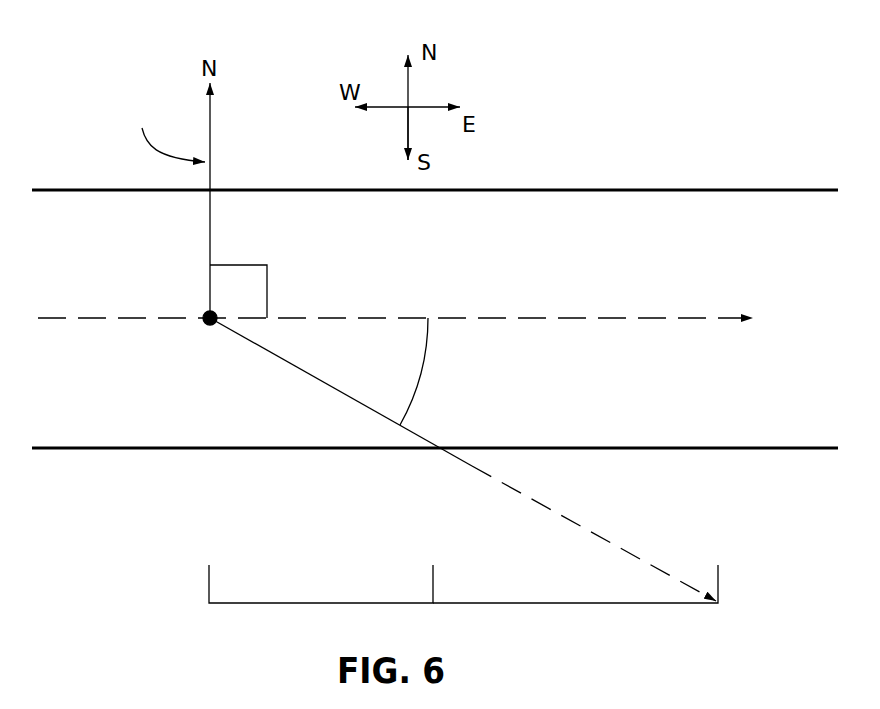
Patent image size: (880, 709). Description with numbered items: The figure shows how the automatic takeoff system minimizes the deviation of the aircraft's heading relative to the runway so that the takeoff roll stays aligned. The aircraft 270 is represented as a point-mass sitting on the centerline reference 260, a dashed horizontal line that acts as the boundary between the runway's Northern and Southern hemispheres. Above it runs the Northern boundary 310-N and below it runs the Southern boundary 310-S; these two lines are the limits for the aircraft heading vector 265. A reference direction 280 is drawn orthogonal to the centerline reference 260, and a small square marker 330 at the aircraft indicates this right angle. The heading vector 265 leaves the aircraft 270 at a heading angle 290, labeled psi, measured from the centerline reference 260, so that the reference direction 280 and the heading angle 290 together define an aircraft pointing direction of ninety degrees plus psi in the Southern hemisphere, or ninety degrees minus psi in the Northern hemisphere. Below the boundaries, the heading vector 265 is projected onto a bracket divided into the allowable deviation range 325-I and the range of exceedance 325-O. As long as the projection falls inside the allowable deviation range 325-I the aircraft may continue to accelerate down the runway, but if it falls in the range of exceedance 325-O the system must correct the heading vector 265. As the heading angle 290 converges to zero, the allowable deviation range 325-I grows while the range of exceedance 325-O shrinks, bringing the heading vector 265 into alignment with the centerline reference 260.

The Northern boundary 310-N is at (686, 172).
The Southern boundary 310-S is at (687, 442).
The centerline reference 260 is at (704, 310).
The heading vector 265 is at (668, 574).
The aircraft 270 is at (200, 327).
The reference direction 280 is at (352, 120).
The heading angle 290 is at (388, 358).
The right angle marker 330 is at (269, 288).
The allowable deviation range 325-I is at (275, 565).
The range of exceedance 325-O is at (500, 560).